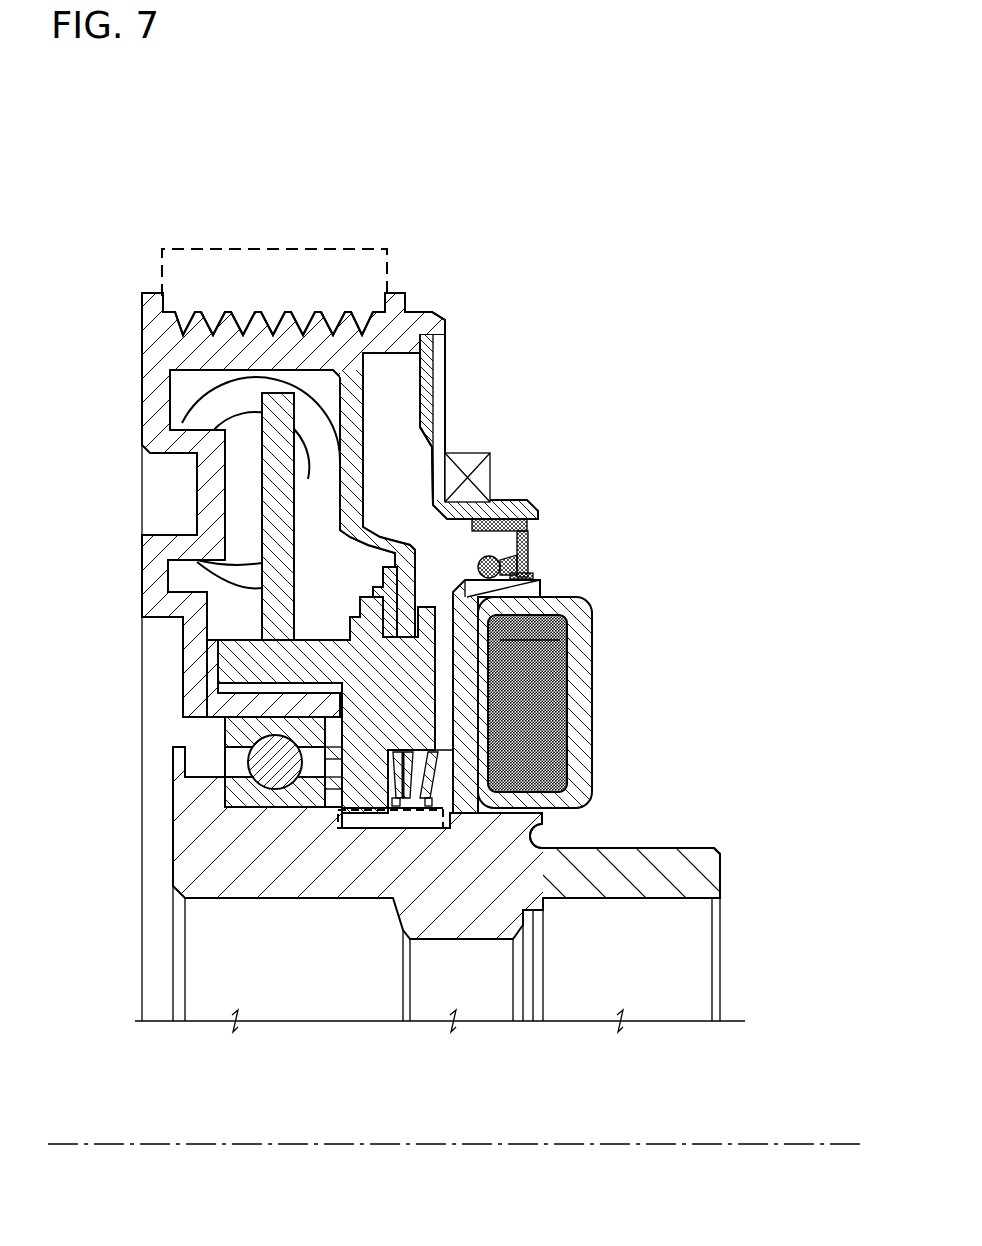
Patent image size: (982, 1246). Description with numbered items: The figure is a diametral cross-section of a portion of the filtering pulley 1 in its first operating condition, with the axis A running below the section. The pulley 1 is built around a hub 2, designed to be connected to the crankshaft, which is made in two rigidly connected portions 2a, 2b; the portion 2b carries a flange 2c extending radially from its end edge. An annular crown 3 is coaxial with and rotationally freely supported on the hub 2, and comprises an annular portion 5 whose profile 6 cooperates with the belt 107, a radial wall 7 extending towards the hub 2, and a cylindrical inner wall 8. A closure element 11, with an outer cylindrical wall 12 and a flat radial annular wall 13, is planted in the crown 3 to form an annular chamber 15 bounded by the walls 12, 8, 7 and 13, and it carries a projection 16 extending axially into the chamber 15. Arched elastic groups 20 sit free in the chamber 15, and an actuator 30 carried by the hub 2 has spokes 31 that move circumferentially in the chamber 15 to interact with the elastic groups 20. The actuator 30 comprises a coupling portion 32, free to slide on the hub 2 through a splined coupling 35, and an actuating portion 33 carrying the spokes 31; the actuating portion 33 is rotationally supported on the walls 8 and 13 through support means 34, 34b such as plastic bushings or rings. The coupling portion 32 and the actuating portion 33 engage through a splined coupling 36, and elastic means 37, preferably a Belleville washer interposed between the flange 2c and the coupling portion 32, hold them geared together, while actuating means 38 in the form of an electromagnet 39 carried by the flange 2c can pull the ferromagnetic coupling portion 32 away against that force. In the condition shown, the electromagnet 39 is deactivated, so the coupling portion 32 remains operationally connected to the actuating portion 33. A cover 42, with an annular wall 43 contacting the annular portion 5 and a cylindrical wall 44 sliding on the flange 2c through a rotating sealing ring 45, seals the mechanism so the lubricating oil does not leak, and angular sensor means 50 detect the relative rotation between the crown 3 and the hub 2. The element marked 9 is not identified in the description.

The filtering pulley 1 is at (660, 318).
The hub 2 is at (720, 846).
The hub portion 2a is at (215, 868).
The hub portion 2b is at (700, 875).
The flange 2c is at (585, 640).
The annular crown 3 is at (445, 315).
The annular portion 5 is at (142, 322).
The profile 6 is at (280, 313).
The radial wall 7 is at (150, 580).
The inner wall 8 is at (270, 765).
The rotor friction plate portion 9 is at (428, 330).
The closure element 11 is at (400, 425).
The outer cylindrical wall 12 is at (235, 355).
The flat radial annular wall 13 is at (378, 530).
The annular chamber 15 is at (226, 478).
The projection 16 is at (205, 490).
The arched elastic groups 20 is at (205, 410).
The actuator 30 is at (445, 545).
The spokes 31 is at (283, 470).
The coupling portion 32 is at (590, 700).
The actuating portion 33 is at (225, 655).
The support means 34 is at (235, 705).
The seal member 34b is at (522, 570).
The splined coupling 35 is at (548, 836).
The splined coupling 36 is at (592, 620).
The elastic means 37 is at (585, 782).
The actuating means 38 is at (598, 722).
The electromagnet 39 is at (590, 660).
The cover 42 is at (520, 497).
The annular wall 43 is at (436, 365).
The cylindrical wall 44 is at (535, 532).
The rotating sealing ring 45 is at (530, 548).
The angular sensor means 50 is at (483, 450).
The belt 107 is at (175, 248).
The axis A is at (775, 1138).